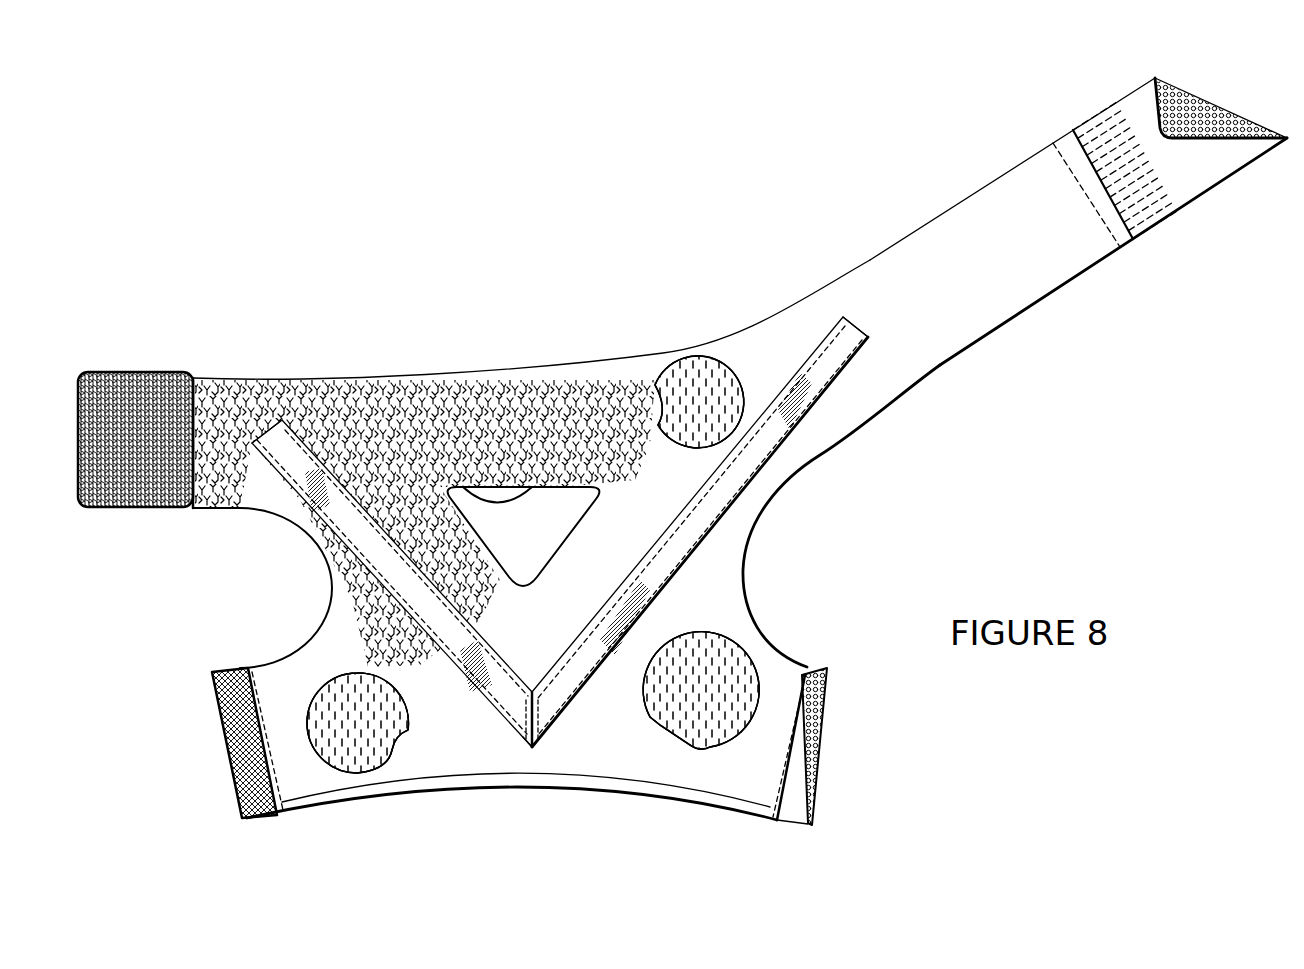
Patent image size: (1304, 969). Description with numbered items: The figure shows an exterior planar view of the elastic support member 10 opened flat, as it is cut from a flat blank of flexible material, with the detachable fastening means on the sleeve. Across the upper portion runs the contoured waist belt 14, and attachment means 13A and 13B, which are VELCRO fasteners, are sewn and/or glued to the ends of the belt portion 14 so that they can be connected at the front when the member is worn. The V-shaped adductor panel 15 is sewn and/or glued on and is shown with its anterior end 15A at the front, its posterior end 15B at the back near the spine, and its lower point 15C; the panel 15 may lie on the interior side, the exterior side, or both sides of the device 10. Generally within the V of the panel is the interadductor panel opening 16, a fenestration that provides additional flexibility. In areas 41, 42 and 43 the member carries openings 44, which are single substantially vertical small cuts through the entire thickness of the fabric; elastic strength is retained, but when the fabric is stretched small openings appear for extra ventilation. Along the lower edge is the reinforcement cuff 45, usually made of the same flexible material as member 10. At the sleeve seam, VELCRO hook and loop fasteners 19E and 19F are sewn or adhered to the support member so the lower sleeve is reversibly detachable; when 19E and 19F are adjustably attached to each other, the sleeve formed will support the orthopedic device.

The elastic support member 10 is at (660, 353).
The attachment means 13A is at (1165, 100).
The attachment means 13B is at (132, 413).
The contoured waist belt 14 is at (933, 220).
The V-shaped adductor panel 15 is at (732, 492).
The anterior end 15A is at (287, 438).
The posterior end 15B is at (843, 317).
The lower point 15C is at (532, 750).
The interadductor panel opening 16 is at (462, 492).
The hook and loop fastener 19E is at (213, 677).
The hook and loop fastener 19F is at (827, 695).
The area 41 is at (733, 375).
The area 42 is at (330, 680).
The area 43 is at (688, 630).
The openings 44 is at (715, 377).
The reinforcement cuff 45 is at (320, 797).